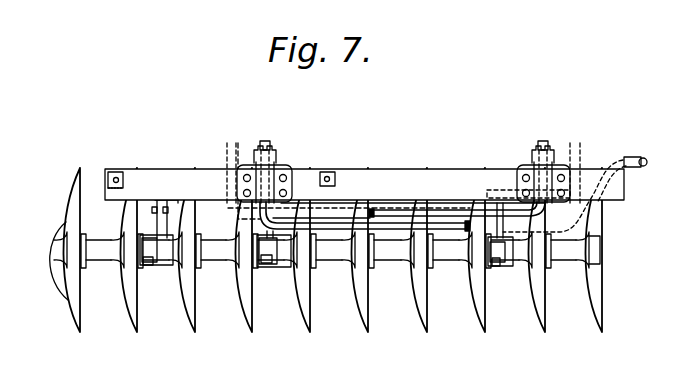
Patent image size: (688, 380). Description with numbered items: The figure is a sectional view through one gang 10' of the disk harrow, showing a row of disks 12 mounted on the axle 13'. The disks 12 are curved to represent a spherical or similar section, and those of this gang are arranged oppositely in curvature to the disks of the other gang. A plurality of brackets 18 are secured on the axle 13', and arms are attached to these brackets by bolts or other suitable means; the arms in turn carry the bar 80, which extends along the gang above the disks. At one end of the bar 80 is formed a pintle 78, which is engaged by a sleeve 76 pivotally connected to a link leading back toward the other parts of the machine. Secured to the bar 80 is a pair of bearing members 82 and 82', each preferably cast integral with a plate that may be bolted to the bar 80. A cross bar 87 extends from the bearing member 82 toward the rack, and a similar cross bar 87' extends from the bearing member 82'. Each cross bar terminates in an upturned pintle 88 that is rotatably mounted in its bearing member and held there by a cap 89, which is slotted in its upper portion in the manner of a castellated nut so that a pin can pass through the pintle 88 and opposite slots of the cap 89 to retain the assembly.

The gang of disks 10' is at (49, 277).
The disks 12 is at (308, 324).
The axle 13' is at (327, 268).
The brackets 18 is at (162, 266).
The sleeve 76 is at (634, 168).
The pintle 78 is at (619, 164).
The bar 80 is at (169, 175).
The bearing member 82 is at (549, 161).
The bearing member 82' is at (278, 175).
The cross bar 87 is at (457, 177).
The cross bar 87' is at (386, 187).
The upturned pintle 88 is at (269, 143).
The cap 89 is at (258, 150).